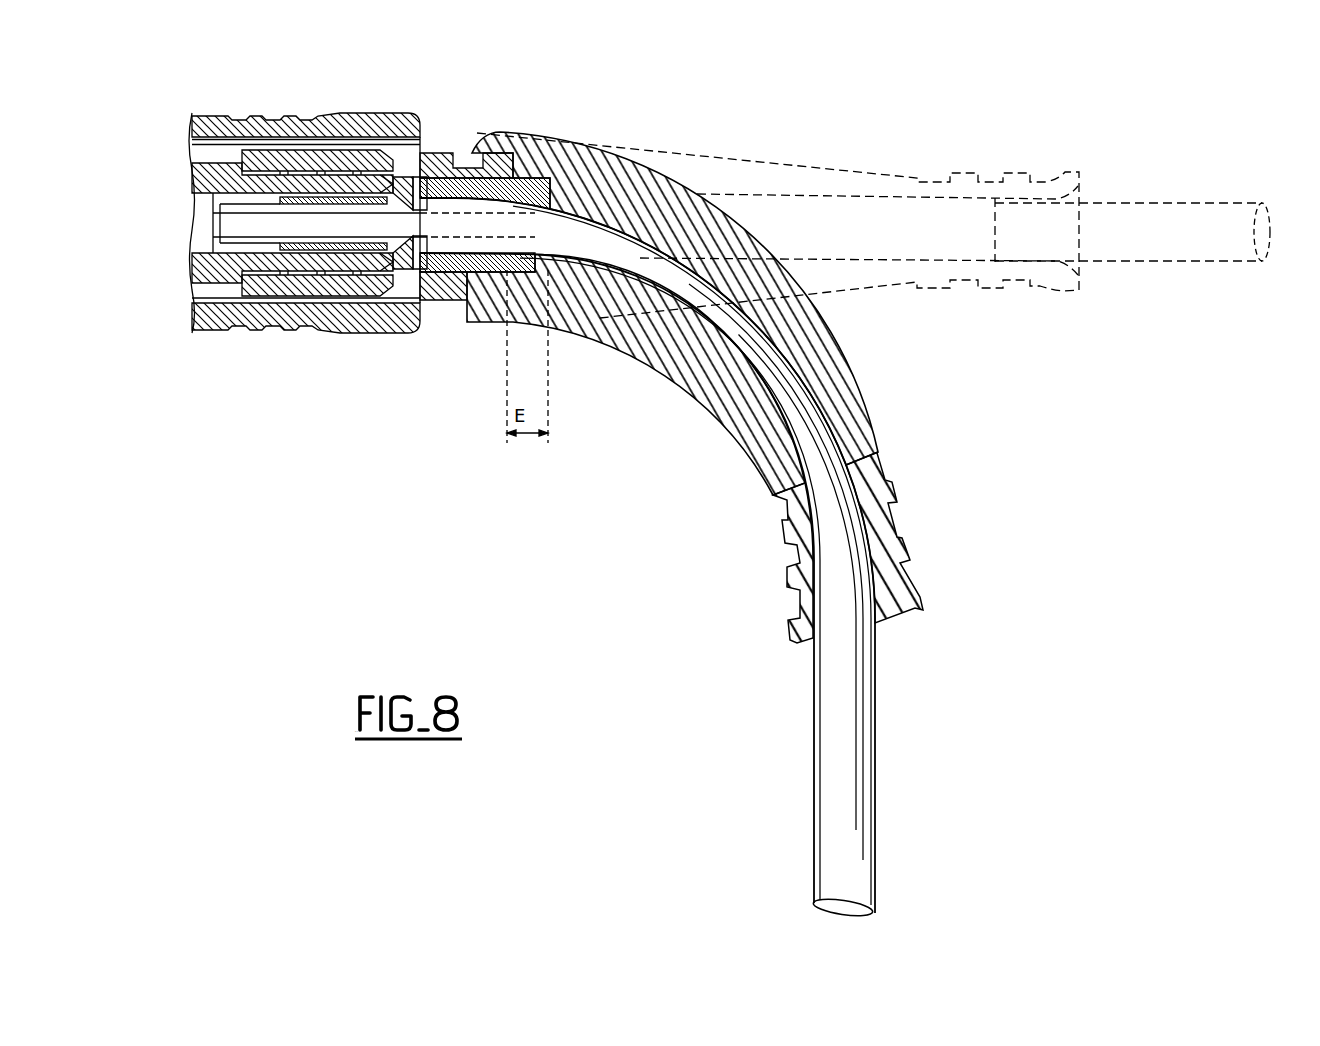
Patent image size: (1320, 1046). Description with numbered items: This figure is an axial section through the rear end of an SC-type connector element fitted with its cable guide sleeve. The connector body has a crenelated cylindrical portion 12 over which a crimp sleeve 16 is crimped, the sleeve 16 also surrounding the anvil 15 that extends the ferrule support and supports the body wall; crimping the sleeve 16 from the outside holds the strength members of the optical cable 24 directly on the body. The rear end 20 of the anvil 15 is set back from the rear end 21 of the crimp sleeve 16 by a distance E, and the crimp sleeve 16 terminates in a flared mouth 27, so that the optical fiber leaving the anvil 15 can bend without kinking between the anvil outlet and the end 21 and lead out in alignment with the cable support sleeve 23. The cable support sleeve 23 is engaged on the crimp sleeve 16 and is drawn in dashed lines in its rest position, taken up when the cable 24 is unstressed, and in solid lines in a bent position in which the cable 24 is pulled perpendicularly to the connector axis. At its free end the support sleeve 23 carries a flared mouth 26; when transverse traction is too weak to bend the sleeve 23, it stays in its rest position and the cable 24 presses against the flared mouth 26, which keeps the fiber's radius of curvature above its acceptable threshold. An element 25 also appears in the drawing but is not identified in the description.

The cylindrical portion of the body 12 is at (317, 303).
The anvil 15 is at (385, 195).
The crimp sleeve 16 is at (453, 160).
The rear end of the anvil 20 is at (518, 190).
The rear end of the crimp sleeve 21 is at (548, 278).
The cable support sleeve 23 is at (1005, 283).
The cable 24 is at (843, 706).
The seal 25 is at (568, 233).
The flared mouth of the cable support sleeve 26 is at (1068, 273).
The flared mouth of the crimp sleeve 27 is at (572, 205).